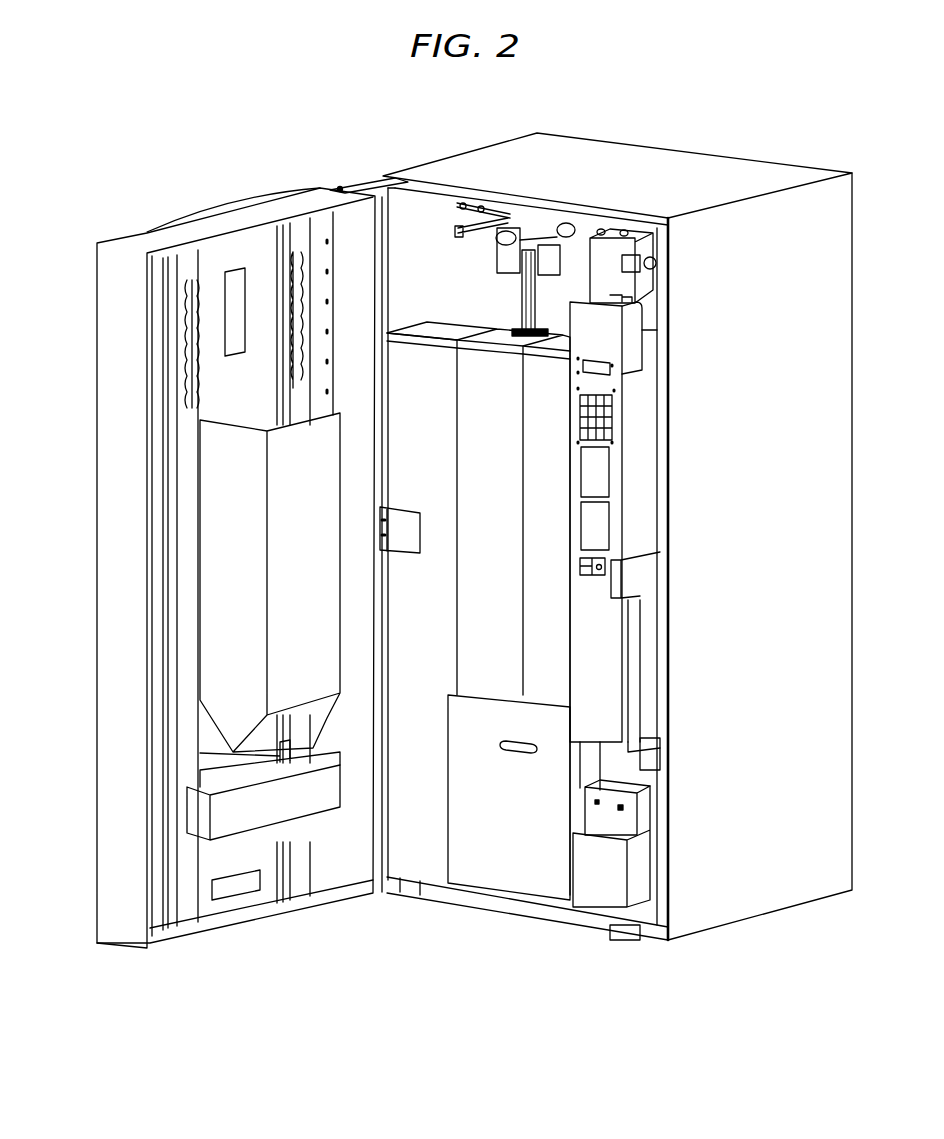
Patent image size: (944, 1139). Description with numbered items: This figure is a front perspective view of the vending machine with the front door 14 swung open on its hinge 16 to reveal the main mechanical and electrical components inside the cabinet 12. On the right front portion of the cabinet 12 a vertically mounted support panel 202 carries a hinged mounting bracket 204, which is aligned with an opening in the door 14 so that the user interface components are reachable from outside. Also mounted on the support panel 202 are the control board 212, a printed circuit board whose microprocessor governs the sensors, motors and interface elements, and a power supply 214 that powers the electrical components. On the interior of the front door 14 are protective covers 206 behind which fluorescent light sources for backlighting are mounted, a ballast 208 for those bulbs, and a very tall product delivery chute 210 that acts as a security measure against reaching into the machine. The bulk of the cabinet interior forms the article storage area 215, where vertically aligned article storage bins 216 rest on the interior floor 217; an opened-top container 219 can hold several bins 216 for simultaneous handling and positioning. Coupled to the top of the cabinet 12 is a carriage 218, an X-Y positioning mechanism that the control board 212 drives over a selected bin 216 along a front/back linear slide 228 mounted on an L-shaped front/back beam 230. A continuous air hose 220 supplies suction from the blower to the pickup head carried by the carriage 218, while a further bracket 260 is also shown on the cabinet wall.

The cabinet 12 is at (639, 153).
The front door 14 is at (132, 240).
The hinge 16 is at (355, 178).
The support panel 202 is at (652, 638).
The hinged mounting bracket 204 is at (631, 323).
The protective covers 206 is at (184, 274).
The ballast 208 is at (195, 820).
The product delivery chute 210 is at (237, 630).
The control board 212 is at (612, 262).
The power supply 214 is at (645, 855).
The article storage area 215 is at (506, 450).
The article storage bins 216 is at (460, 330).
The interior floor 217 is at (497, 912).
The carriage 218 is at (496, 255).
The opened-top container 219 is at (484, 700).
The air hose 220 is at (536, 300).
The front/back linear slide 228 is at (465, 207).
The front/back beam 230 is at (461, 232).
The sensor bracket 260 is at (420, 555).